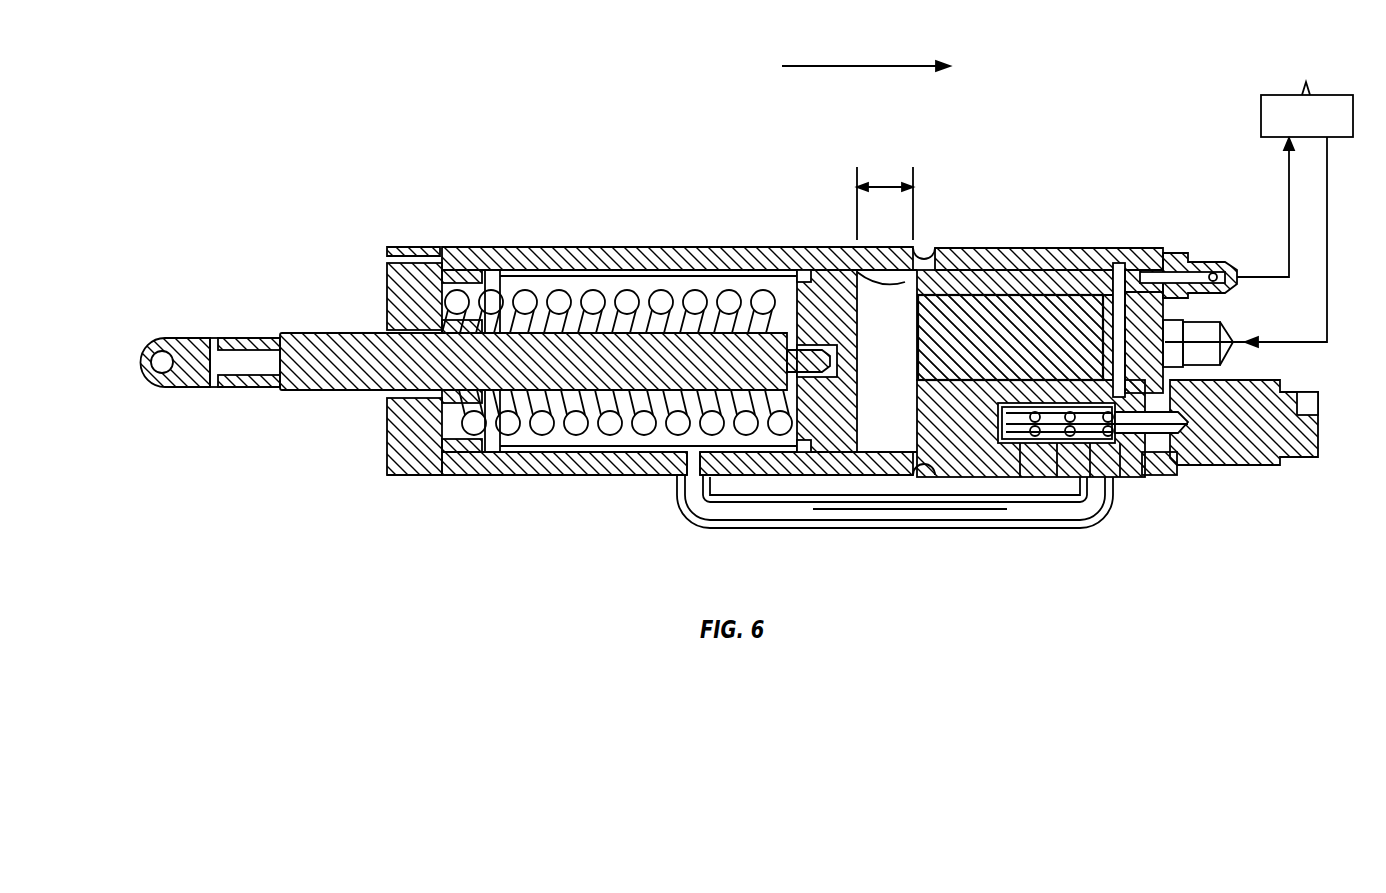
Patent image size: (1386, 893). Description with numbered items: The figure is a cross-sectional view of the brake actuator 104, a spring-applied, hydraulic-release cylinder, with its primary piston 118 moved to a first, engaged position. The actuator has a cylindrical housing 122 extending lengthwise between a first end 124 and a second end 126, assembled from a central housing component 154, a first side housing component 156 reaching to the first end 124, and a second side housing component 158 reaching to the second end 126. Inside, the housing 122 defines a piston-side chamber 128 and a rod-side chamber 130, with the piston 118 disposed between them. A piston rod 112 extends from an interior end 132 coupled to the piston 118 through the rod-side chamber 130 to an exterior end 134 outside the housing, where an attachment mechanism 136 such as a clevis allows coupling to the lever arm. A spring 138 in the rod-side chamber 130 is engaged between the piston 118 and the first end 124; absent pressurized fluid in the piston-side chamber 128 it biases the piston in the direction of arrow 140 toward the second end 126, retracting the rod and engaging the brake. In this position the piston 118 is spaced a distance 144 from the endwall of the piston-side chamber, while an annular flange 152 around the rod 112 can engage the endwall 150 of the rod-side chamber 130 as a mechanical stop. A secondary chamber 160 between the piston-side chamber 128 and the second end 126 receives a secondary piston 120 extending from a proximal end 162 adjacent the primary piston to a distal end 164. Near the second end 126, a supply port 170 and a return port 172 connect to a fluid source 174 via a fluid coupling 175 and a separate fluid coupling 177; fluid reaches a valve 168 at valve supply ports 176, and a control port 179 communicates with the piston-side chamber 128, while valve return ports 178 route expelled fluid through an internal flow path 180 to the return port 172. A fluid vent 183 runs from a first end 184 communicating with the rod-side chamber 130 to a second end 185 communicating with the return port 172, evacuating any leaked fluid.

The brake actuator 104 is at (385, 116).
The piston rod 112 is at (318, 336).
The primary piston 118 is at (815, 272).
The secondary piston 120 is at (1002, 325).
The housing 122 is at (698, 240).
The first end 124 is at (385, 270).
The second end 126 is at (1186, 476).
The piston-side chamber 128 is at (903, 371).
The rod-side chamber 130 is at (560, 435).
The interior end 132 is at (790, 375).
The exterior end 134 is at (146, 352).
The attachment mechanism 136 is at (194, 345).
The spring 138 is at (563, 300).
The arrow 140 is at (850, 66).
The distance 144 is at (880, 187).
The endwall 150 is at (898, 447).
The annular flange 152 is at (540, 288).
The central housing component 154 is at (622, 265).
The first side housing component 156 is at (410, 460).
The second side housing component 158 is at (948, 250).
The secondary chamber 160 is at (1025, 293).
The proximal end 162 is at (850, 265).
The distal end 164 is at (1108, 268).
The valve 168 is at (1297, 468).
The supply port 170 is at (1218, 318).
The return port 172 is at (1210, 262).
The fluid source 174 is at (1321, 132).
The fluid coupling 175 is at (1328, 224).
The valve supply port 176 is at (1038, 436).
The fluid coupling 177 is at (1288, 177).
The valve return port 178 is at (1105, 436).
The control port 179 is at (1068, 436).
The internal flow path 180 is at (1127, 292).
The fluid vent 183 is at (808, 538).
The first end 184 is at (685, 462).
The second end 185 is at (1130, 478).